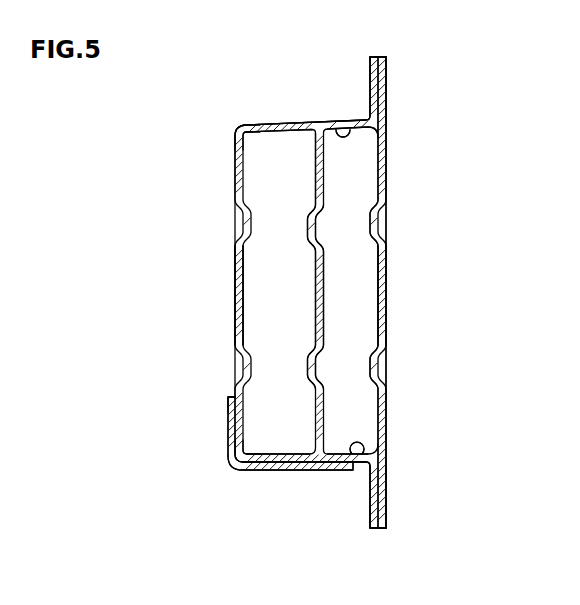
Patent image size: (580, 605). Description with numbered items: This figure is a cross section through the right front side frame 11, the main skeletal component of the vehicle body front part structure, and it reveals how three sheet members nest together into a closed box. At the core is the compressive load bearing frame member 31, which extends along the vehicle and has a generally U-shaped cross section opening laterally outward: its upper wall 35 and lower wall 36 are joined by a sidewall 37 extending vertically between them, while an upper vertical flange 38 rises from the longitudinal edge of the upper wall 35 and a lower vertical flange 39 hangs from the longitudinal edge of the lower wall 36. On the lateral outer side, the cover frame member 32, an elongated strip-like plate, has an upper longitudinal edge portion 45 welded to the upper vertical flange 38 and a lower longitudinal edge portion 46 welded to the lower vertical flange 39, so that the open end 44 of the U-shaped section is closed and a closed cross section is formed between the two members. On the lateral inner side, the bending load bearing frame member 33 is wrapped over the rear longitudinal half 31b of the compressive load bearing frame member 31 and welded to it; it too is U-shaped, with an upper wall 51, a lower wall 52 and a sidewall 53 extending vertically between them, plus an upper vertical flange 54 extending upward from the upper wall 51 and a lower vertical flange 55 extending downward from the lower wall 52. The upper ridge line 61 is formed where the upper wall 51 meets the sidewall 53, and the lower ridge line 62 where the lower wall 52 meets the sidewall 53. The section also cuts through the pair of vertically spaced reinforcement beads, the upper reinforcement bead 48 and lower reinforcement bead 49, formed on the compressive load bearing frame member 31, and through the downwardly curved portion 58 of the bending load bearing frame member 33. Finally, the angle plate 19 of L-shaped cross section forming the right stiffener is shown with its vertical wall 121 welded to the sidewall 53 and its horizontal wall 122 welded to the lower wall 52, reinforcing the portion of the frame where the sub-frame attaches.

The right front side frame 11 is at (488, 340).
The angle plate 19 is at (216, 406).
The compressive load bearing frame member 31 is at (338, 176).
The rear longitudinal half 31b is at (316, 192).
The cover frame member 32 is at (398, 284).
The bending load bearing frame member 33 is at (256, 345).
The upper wall 35 is at (344, 121).
The lower wall 36 is at (358, 466).
The sidewall 37 is at (315, 301).
The upper vertical flange 38 is at (386, 66).
The lower vertical flange 39 is at (387, 472).
The open end 44 is at (387, 133).
The upper longitudinal edge portion 45 is at (387, 92).
The lower longitudinal edge portion 46 is at (387, 503).
The upper reinforcement bead 48 is at (306, 222).
The lower reinforcement bead 49 is at (306, 366).
The upper wall 51 is at (288, 121).
The lower wall 52 is at (293, 463).
The sidewall 53 is at (234, 309).
The upper vertical flange 54 is at (368, 70).
The lower vertical flange 55 is at (367, 513).
The downwardly curved portion 58 is at (234, 278).
The upper ridge line 61 is at (236, 127).
The lower ridge line 62 is at (232, 459).
The vertical wall 121 is at (229, 429).
The horizontal wall 122 is at (258, 471).